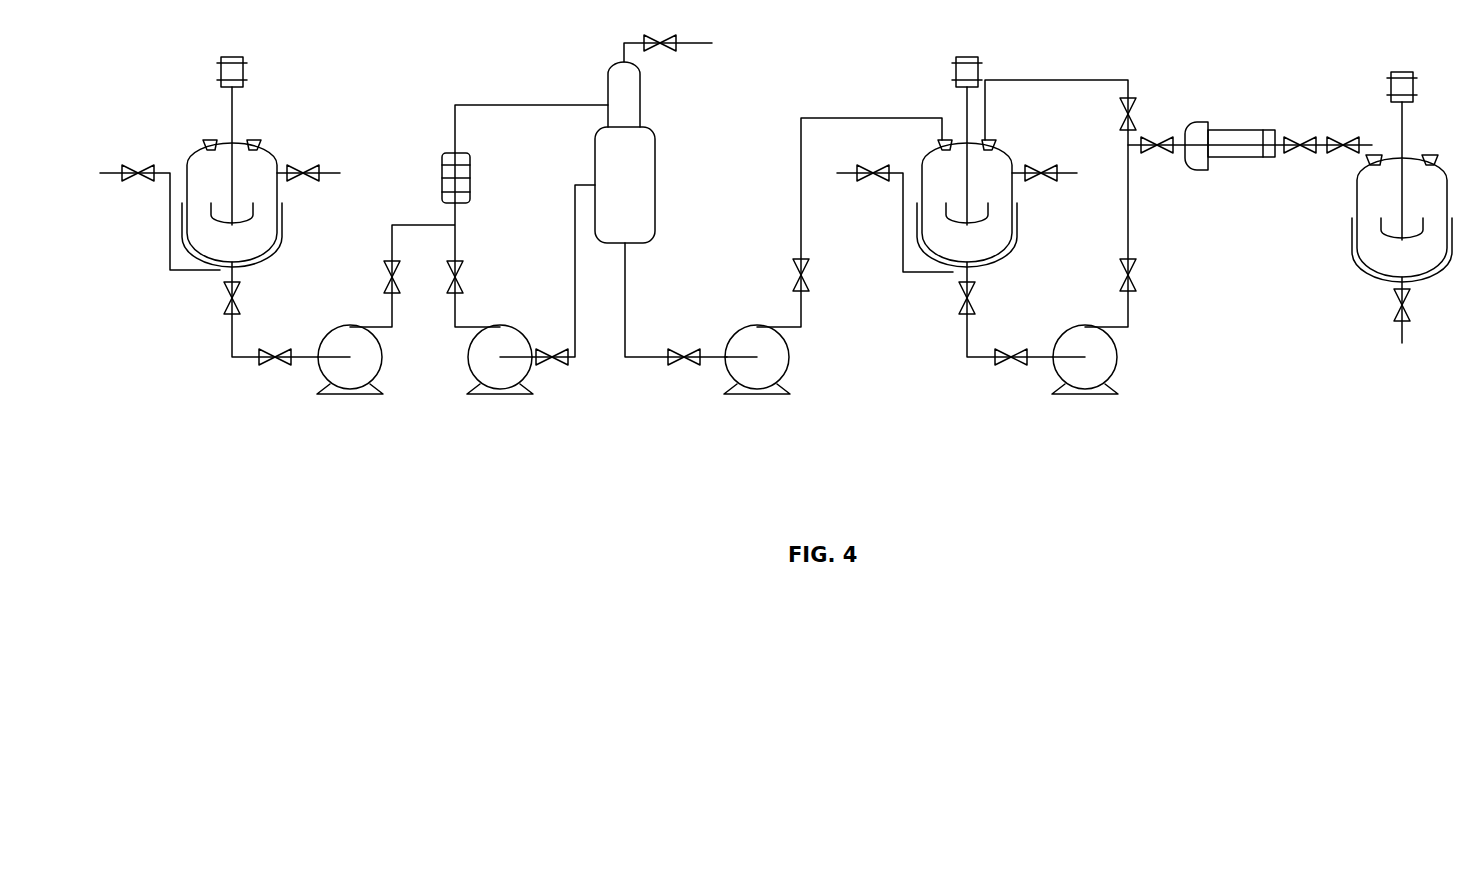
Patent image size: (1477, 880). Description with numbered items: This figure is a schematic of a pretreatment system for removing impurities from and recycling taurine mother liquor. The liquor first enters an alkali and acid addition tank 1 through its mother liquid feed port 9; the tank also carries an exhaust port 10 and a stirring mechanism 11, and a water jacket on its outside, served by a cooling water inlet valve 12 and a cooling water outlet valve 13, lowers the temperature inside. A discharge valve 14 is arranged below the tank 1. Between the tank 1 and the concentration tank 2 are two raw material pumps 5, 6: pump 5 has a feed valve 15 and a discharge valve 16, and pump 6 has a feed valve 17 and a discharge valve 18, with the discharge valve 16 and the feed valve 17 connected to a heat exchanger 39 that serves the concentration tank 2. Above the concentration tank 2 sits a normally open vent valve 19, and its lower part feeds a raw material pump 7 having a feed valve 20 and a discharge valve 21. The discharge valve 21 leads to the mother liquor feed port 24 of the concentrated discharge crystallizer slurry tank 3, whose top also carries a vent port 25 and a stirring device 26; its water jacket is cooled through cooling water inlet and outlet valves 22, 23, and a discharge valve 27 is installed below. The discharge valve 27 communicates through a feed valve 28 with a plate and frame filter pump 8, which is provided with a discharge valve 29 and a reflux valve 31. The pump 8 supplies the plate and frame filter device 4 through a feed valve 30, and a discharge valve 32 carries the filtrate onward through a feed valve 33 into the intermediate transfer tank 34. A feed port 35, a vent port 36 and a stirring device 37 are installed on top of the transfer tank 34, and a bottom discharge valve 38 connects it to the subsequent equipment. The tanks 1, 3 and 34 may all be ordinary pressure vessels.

The alkali and acid addition tank 1 is at (263, 173).
The concentration tank 2 is at (637, 177).
The concentrated discharge crystallizer slurry tank 3 is at (948, 242).
The filter device 4 is at (1233, 140).
The raw material pump 5 is at (367, 362).
The raw material pump 6 is at (478, 363).
The raw material pump 7 is at (777, 363).
The plate and frame filter pump 8 is at (1100, 360).
The mother liquid feed port 9 is at (203, 143).
The exhaust port 10 is at (265, 142).
The stirring mechanism 11 is at (235, 72).
The cooling water inlet valve 12 is at (133, 173).
The cooling water outlet valve 13 is at (313, 178).
The discharge valve 14 is at (235, 290).
The feed valve 15 is at (262, 362).
The discharge valve 16 is at (387, 268).
The feed valve 17 is at (457, 263).
The discharge valve 18 is at (548, 362).
The vent valve 19 is at (672, 47).
The feed valve 20 is at (675, 350).
The discharge valve 21 is at (797, 280).
The cooling water inlet valve 22 is at (863, 182).
The cooling water outlet valve 23 is at (1052, 180).
The mother liquor feed port 24 is at (940, 143).
The vent port 25 is at (1007, 145).
The stirring device 26 is at (963, 73).
The discharge valve 27 is at (977, 308).
The feed valve 28 is at (1007, 360).
The discharge valve 29 is at (1135, 280).
The feed valve 30 is at (1150, 147).
The reflux valve 31 is at (1130, 98).
The discharge valve 32 is at (1287, 147).
The feed valve 33 is at (1330, 140).
The intermediate transfer tank 34 is at (1372, 195).
The feed port 35 is at (1370, 147).
The vent port 36 is at (1433, 153).
The stirring device 37 is at (1396, 90).
The bottom discharge valve 38 is at (1398, 313).
The heat exchanger 39 is at (445, 157).